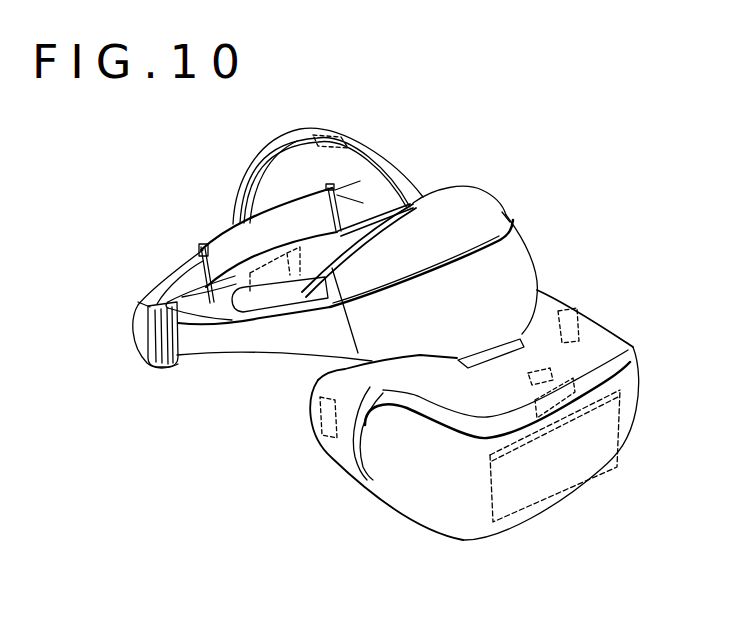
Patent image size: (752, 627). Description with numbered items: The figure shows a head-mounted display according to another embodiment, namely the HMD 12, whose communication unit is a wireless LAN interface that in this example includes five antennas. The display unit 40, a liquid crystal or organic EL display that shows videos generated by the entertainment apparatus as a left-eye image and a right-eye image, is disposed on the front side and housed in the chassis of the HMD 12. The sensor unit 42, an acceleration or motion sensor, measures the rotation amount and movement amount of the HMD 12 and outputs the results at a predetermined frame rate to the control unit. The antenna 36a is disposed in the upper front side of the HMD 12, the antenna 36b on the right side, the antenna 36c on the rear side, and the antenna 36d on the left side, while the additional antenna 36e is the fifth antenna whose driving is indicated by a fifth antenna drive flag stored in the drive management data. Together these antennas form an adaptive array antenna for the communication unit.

The HMD 12 is at (422, 525).
The display unit 40 is at (636, 407).
The sensor unit 42 is at (530, 379).
The antenna 36a is at (575, 378).
The antenna 36b is at (324, 440).
The antenna 36c is at (300, 249).
The antenna 36d is at (579, 322).
The antenna 36e is at (331, 127).